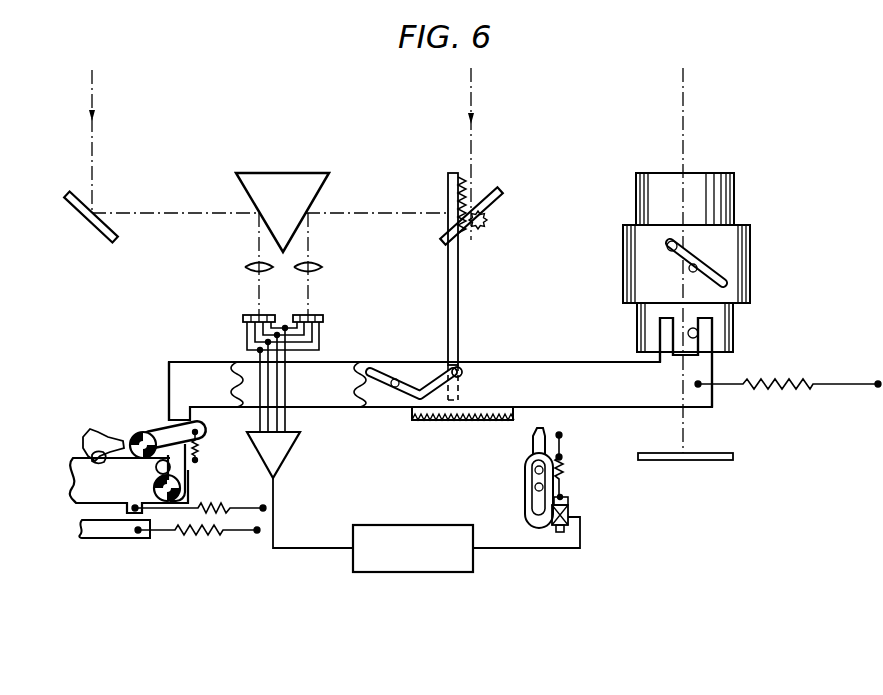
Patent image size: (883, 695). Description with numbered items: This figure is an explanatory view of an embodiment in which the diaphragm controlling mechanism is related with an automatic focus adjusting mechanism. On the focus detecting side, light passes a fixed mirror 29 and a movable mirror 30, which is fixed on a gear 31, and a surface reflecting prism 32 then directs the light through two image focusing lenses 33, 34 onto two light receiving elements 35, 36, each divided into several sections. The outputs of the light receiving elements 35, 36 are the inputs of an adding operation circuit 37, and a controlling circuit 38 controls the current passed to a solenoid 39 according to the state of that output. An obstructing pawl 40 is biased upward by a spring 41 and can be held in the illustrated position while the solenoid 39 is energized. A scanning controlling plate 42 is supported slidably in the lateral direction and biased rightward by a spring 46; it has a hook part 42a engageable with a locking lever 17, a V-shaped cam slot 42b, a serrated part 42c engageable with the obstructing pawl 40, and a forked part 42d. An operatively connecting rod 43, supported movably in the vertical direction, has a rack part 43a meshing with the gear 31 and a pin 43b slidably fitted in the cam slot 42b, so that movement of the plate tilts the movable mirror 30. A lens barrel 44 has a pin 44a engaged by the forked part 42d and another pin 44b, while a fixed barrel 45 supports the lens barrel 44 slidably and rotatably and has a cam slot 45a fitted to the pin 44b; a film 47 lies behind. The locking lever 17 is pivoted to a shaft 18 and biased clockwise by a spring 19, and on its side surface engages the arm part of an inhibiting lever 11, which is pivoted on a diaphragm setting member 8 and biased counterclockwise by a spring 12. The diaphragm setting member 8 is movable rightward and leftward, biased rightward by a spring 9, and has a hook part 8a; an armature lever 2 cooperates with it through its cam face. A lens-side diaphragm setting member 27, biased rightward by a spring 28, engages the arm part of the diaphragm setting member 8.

The armature lever 2 is at (95, 431).
The diaphragm setting member 8 is at (72, 486).
The hook part 8a is at (91, 457).
The spring 9 is at (229, 520).
The inhibiting lever 11 is at (181, 488).
The spring 12 is at (171, 466).
The locking lever 17 is at (166, 432).
The shaft 18 is at (141, 440).
The spring 19 is at (199, 444).
The diaphragm setting member 27 is at (100, 540).
The spring 28 is at (190, 540).
The fixed mirror 29 is at (96, 229).
The movable mirror 30 is at (499, 199).
The gear 31 is at (481, 229).
The surface reflecting prism 32 is at (284, 190).
The image focusing lens 33 is at (250, 265).
The image focusing lens 34 is at (318, 265).
The light receiving element 35 is at (250, 314).
The light receiving element 36 is at (310, 314).
The adding operation circuit 37 is at (286, 449).
The controlling circuit 38 is at (400, 572).
The solenoid 39 is at (570, 517).
The obstructing pawl 40 is at (525, 481).
The spring 41 is at (563, 466).
The scanning controlling plate 42 is at (543, 356).
The hook part 42a is at (180, 408).
The V-shaped cam slot 42b is at (396, 378).
The serrated part 42c is at (447, 422).
The forked part 42d is at (666, 326).
The operatively connecting rod 43 is at (459, 268).
The rack part 43a is at (463, 186).
The pin 43b is at (462, 369).
The lens barrel 44 is at (731, 200).
The pin 44a is at (698, 333).
The pin 44b is at (678, 246).
The fixed barrel 45 is at (752, 267).
The cam slot 45a is at (689, 269).
The spring 46 is at (776, 392).
The film 47 is at (730, 461).